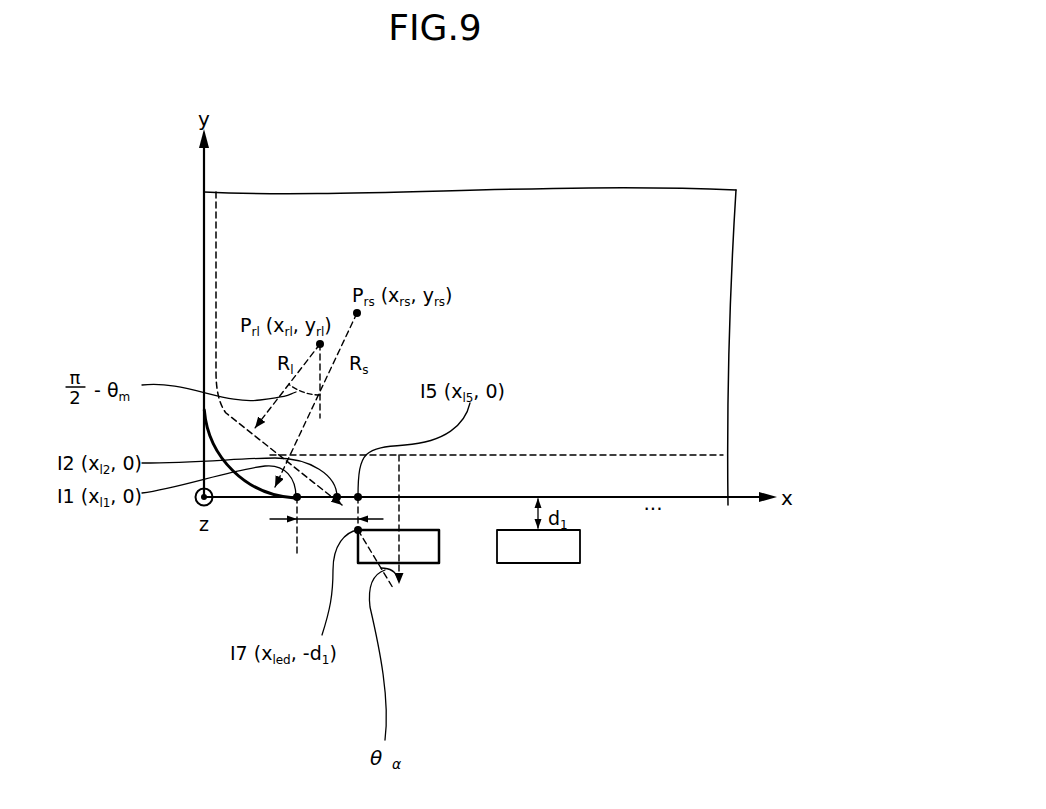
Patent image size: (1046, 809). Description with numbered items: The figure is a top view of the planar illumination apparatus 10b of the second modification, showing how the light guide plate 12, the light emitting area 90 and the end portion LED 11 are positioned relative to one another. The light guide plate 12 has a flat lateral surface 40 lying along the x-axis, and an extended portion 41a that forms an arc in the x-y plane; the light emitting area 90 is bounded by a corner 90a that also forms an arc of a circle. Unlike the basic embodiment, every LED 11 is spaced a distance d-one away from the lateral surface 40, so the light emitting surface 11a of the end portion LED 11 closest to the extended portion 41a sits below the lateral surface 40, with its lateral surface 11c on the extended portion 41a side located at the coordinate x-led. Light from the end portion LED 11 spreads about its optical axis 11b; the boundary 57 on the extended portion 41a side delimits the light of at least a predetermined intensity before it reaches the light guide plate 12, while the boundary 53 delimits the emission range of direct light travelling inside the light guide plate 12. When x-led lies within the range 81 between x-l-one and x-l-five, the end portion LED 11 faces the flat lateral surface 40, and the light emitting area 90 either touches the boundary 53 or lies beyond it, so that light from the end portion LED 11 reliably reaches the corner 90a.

The light emitting area 90 is at (468, 225).
The planar illumination apparatus 10b is at (676, 159).
The boundary 53 is at (215, 403).
The corner 90a is at (240, 430).
The extended portion 41a is at (245, 481).
The range 81 is at (308, 520).
The boundary 57 is at (326, 520).
The LED 11 is at (420, 553).
The light emitting surface 11a is at (420, 518).
The optical axis 11b is at (400, 472).
The lateral surface 11c is at (358, 563).
The lateral surface 40 is at (615, 498).
The light guide plate 12 is at (707, 483).